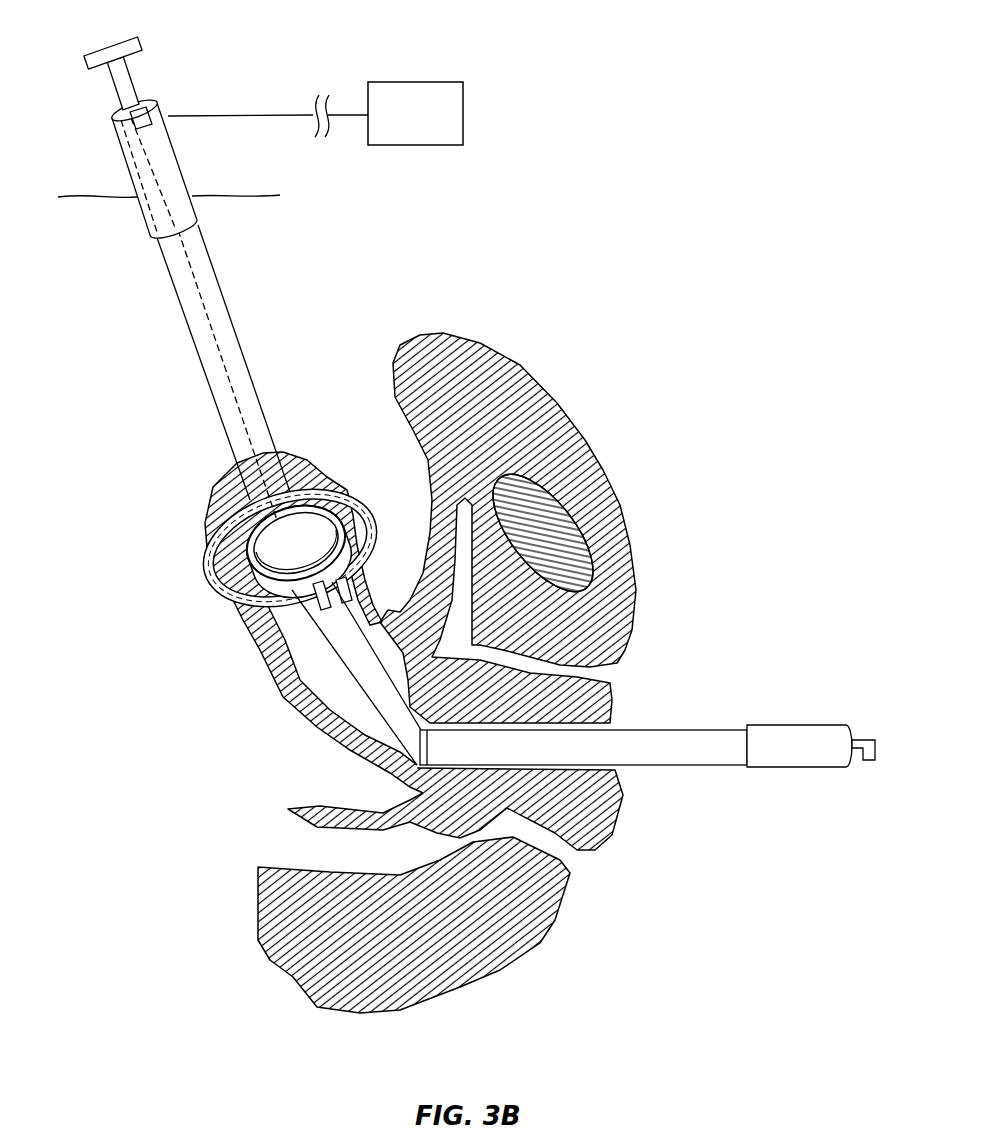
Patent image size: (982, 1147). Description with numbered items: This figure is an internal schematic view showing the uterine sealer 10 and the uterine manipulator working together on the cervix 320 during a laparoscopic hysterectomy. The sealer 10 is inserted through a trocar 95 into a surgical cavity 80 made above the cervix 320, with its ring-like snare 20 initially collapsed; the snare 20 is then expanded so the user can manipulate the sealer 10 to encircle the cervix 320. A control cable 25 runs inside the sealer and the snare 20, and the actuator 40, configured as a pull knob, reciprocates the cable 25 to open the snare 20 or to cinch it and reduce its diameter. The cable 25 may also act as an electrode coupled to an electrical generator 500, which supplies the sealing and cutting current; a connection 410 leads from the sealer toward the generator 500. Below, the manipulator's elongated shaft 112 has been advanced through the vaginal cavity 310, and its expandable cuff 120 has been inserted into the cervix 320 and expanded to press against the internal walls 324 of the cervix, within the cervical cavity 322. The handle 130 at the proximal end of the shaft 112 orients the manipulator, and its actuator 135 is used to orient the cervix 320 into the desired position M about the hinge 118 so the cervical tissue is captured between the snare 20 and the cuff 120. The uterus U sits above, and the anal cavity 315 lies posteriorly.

The uterine sealer 10 is at (168, 108).
The ring-like snare 20 is at (215, 602).
The control cable 25 is at (205, 320).
The actuator 40 is at (113, 43).
The surgical cavity 80 is at (97, 273).
The trocar 95 is at (118, 150).
The shaft 112 is at (712, 728).
The hinge 118 is at (384, 780).
The cuff 120 is at (250, 556).
The handle 130 is at (795, 725).
The actuator 135 is at (868, 763).
The vaginal cavity 310 is at (620, 723).
The anal cavity 315 is at (580, 860).
The cervix 320 is at (210, 486).
The cervical cavity 322 is at (325, 729).
The internal walls of the cervix 324 is at (272, 650).
The cable 410 is at (267, 113).
The electrical generator 500 is at (432, 82).
The uterus U is at (325, 446).
The position M is at (348, 708).